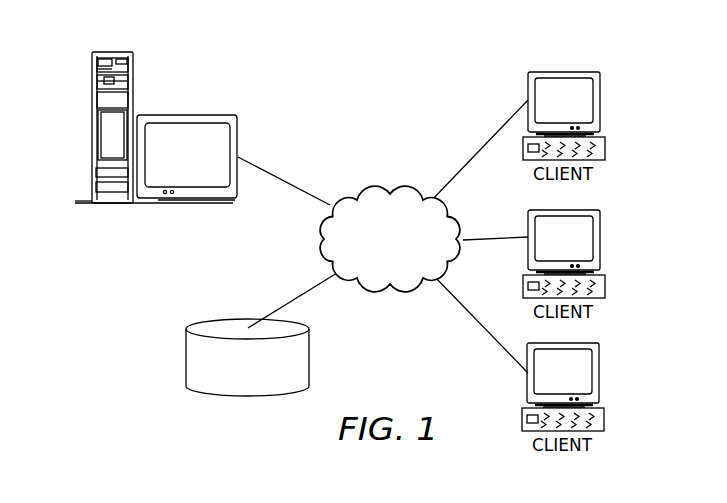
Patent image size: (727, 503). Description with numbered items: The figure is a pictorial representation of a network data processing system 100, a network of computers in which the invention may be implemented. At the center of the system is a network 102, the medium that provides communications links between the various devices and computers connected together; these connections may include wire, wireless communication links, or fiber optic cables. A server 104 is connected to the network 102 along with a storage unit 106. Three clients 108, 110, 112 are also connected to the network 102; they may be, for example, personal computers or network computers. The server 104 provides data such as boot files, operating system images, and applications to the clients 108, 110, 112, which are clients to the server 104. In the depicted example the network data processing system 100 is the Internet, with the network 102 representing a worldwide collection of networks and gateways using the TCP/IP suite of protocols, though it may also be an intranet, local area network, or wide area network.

The network data processing system 100 is at (444, 80).
The network 102 is at (362, 192).
The server 104 is at (92, 130).
The storage unit 106 is at (186, 360).
The client 108 is at (601, 102).
The client 110 is at (601, 240).
The client 112 is at (600, 372).